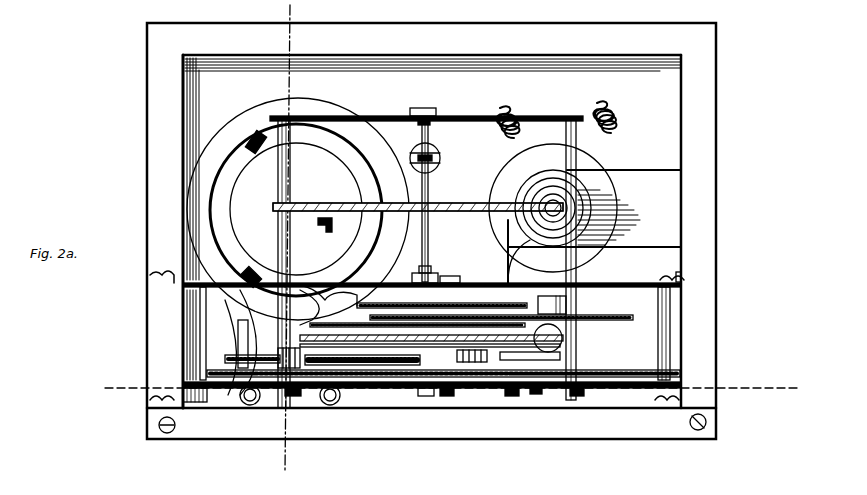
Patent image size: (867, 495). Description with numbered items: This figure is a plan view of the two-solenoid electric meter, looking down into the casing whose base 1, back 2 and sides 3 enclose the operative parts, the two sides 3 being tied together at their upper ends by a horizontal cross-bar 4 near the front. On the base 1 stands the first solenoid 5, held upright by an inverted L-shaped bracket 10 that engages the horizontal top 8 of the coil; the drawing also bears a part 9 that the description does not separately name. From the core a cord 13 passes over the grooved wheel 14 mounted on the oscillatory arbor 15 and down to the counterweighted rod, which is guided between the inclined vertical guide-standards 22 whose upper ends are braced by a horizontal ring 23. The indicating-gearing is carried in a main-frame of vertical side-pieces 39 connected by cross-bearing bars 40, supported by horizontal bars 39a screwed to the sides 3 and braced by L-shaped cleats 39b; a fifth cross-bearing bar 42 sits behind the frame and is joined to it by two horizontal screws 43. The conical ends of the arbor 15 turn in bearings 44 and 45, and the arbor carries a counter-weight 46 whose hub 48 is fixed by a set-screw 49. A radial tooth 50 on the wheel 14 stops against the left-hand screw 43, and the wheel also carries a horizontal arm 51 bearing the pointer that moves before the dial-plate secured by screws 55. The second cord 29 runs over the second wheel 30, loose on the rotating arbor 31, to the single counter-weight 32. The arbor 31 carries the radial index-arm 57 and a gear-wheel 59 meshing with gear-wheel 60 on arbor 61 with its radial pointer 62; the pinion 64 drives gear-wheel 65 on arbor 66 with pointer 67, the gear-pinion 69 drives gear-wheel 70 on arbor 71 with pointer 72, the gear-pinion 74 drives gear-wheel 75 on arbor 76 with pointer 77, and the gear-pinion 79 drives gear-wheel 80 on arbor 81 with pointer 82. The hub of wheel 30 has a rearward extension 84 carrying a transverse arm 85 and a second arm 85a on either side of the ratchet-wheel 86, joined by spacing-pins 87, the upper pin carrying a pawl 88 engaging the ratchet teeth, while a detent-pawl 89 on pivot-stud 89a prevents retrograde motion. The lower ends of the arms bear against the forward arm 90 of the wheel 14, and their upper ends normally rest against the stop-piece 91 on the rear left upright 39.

The base 1 is at (420, 93).
The back 2 is at (430, 41).
The sides 3 is at (172, 147).
The horizontal cross-bar 4 is at (238, 14).
The first solenoid 5 is at (240, 320).
The horizontal top of the coil 8 is at (496, 173).
The drum 9 is at (550, 195).
The inverted L-shaped bracket 10 is at (594, 226).
The cord 13 is at (438, 222).
The grooved wheel 14 is at (440, 200).
The horizontal oscillatory arbor 15 is at (428, 178).
The vertical guide-standards 22 is at (250, 144).
The horizontal ring 23 is at (183, 182).
The cord 29 is at (382, 351).
The second wheel 30 is at (530, 352).
The horizontal rotating arbor 31 is at (422, 358).
The counter-weight 32 is at (562, 345).
The vertical side-pieces 39 is at (183, 285).
The horizontal bars 39a is at (183, 330).
The L-shaped cleats 39b is at (178, 278).
The cross-bearing bars 40 is at (618, 283).
The fifth horizontal cross-bearing bar 42 is at (426, 106).
The horizontal screws 43 is at (278, 188).
The bearing 44 is at (462, 277).
The bearing 45 is at (424, 110).
The counter-weight 46 is at (416, 146).
The hub 48 is at (440, 160).
The set-screw 49 is at (438, 153).
The radial outwardly extending tooth 50 is at (278, 214).
The horizontal arm 51 is at (328, 230).
The screws 55 is at (190, 410).
The radial index-arm 57 is at (426, 396).
The gear-wheel 59 is at (512, 396).
The gear-wheel 60 is at (218, 388).
The horizontal arbor 61 is at (278, 330).
The radial pointer 62 is at (282, 390).
The pinion 64 is at (252, 349).
The gear-wheel 65 is at (232, 362).
The horizontal arbor 66 is at (296, 396).
The radial pointer 67 is at (332, 404).
The gear-pinion 69 is at (306, 307).
The gear-wheel 70 is at (418, 318).
The horizontal arbor 71 is at (466, 388).
The radial pointer 72 is at (454, 396).
The gear-pinion 74 is at (406, 325).
The gear-wheel 75 is at (618, 320).
The horizontal arbor 76 is at (566, 360).
The radial pointer 77 is at (540, 396).
The gear-pinion 79 is at (498, 355).
The gear-wheel 80 is at (636, 349).
The horizontal arbor 81 is at (580, 330).
The radial pointer 82 is at (580, 396).
The rearward extension 84 is at (420, 273).
The transverse arm 85 is at (386, 267).
The second arm 85a is at (380, 283).
The ratchet-wheel 86 is at (520, 283).
The screws or spacing-pins 87 is at (352, 283).
The pawl 88 is at (336, 283).
The detent-pawl 89 is at (552, 305).
The pivot-stud 89a is at (577, 306).
The arm 90 is at (508, 268).
The stop-piece 91 is at (321, 295).